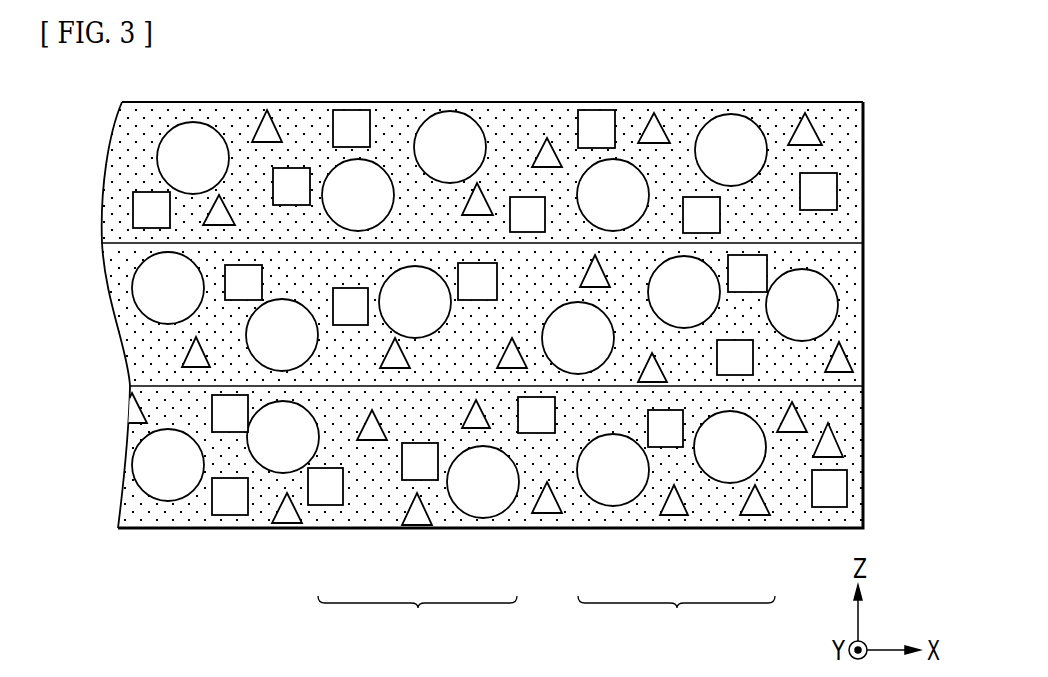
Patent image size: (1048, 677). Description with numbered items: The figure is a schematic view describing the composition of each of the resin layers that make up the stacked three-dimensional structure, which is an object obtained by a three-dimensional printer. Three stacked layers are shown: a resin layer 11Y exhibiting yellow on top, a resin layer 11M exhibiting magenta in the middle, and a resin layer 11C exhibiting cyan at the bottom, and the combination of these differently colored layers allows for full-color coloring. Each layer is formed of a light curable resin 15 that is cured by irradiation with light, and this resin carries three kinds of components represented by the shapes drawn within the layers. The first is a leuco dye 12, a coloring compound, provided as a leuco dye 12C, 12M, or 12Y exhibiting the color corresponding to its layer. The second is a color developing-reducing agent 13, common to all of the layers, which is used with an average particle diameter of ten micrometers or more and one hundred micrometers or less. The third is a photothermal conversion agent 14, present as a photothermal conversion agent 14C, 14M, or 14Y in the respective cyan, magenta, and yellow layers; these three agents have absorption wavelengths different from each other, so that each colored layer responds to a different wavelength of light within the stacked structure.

The resin layer exhibiting yellow 11Y is at (855, 174).
The resin layer exhibiting magenta 11M is at (855, 316).
The resin layer exhibiting cyan 11C is at (855, 461).
The leuco dye 12 is at (676, 619).
The leuco dye 12C is at (545, 503).
The leuco dye 12M is at (650, 368).
The leuco dye 12Y is at (805, 133).
The color developing-reducing agent 13 is at (277, 347).
The photothermal conversion agent 14 is at (417, 619).
The photothermal conversion agent 14C is at (323, 487).
The photothermal conversion agent 14M is at (478, 283).
The photothermal conversion agent 14Y is at (593, 137).
The light curable resin 15 is at (140, 497).